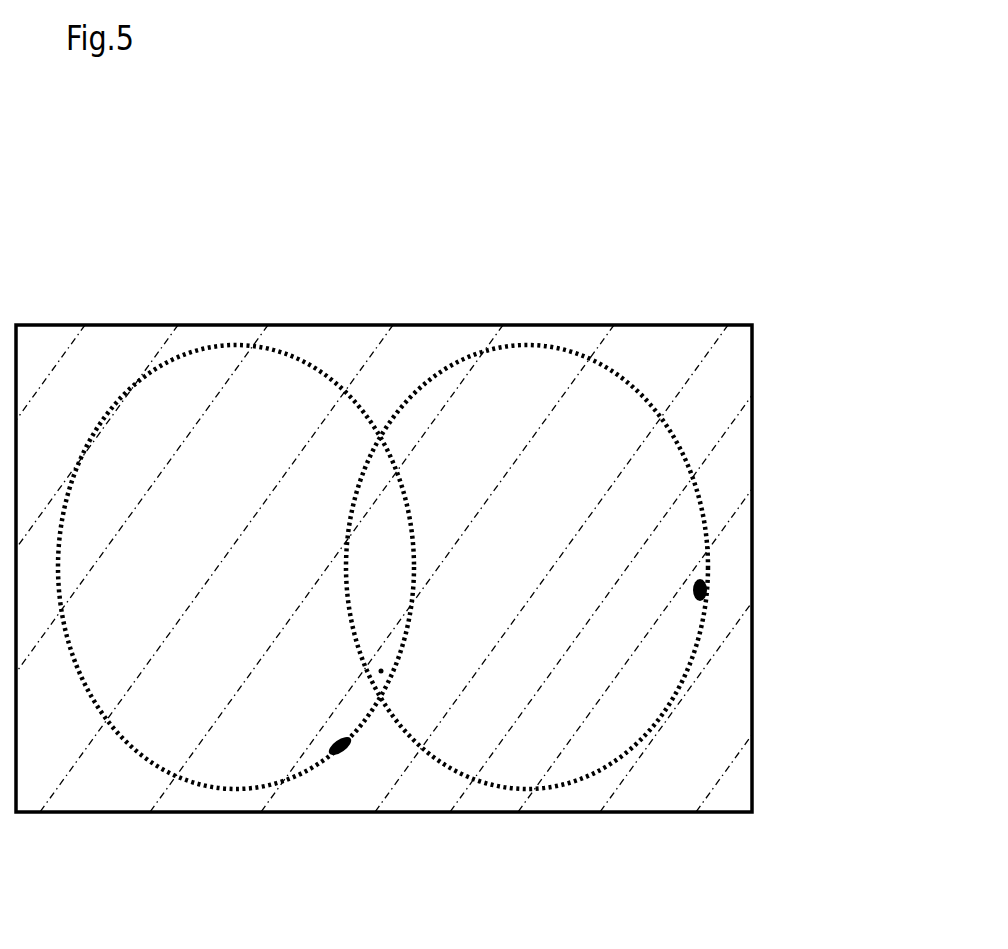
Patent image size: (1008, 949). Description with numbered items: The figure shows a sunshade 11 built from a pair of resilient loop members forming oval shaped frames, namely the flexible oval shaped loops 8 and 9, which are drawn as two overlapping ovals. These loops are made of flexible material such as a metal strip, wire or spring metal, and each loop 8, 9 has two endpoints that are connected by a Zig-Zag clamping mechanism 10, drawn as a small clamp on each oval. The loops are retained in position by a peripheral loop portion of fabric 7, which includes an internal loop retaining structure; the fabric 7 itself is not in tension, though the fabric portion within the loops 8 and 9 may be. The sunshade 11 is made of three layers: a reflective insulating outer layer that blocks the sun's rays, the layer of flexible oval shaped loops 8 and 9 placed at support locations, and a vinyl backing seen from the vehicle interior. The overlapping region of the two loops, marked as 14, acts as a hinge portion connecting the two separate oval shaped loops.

The fabric 7 is at (663, 347).
The flexible oval shaped loop 8 is at (552, 347).
The flexible oval shaped loop 9 is at (223, 338).
The Zig-Zag clamping mechanism 10 is at (710, 585).
The sunshade 11 is at (385, 337).
The intersection point 14 is at (380, 670).